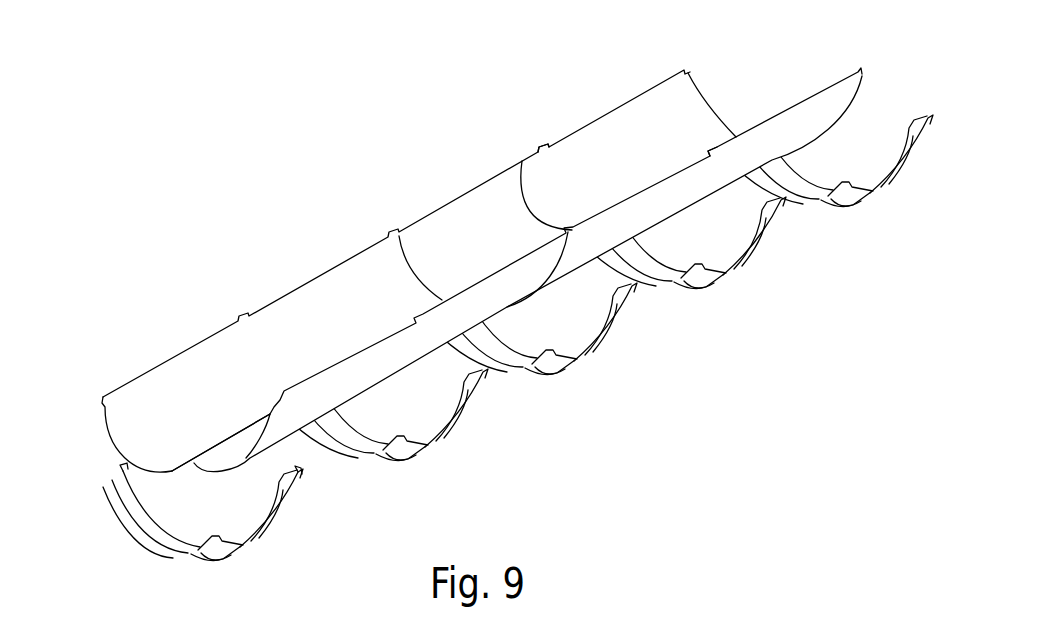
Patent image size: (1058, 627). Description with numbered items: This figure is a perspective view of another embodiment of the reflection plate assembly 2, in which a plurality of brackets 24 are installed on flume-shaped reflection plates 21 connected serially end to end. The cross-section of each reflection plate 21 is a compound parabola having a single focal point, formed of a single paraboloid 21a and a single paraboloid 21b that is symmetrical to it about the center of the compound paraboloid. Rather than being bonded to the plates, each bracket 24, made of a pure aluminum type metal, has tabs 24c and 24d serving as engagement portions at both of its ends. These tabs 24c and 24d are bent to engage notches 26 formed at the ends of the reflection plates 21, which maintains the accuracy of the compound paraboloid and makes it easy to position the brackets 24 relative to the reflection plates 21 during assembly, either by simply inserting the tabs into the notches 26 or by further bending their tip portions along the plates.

The reflection plate assembly 2 is at (502, 288).
The reflection plate 21 is at (644, 86).
The single paraboloid 21a is at (145, 408).
The single paraboloid 21b is at (237, 450).
The bracket 24 is at (294, 505).
The tab 24c is at (118, 467).
The tab 24d is at (296, 467).
The notch 26 is at (716, 148).